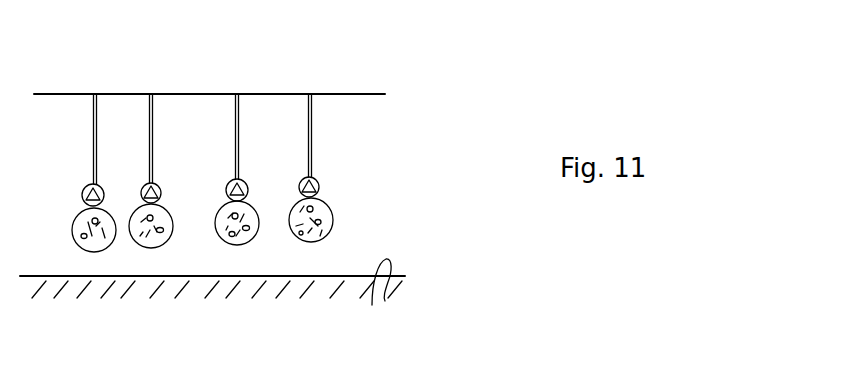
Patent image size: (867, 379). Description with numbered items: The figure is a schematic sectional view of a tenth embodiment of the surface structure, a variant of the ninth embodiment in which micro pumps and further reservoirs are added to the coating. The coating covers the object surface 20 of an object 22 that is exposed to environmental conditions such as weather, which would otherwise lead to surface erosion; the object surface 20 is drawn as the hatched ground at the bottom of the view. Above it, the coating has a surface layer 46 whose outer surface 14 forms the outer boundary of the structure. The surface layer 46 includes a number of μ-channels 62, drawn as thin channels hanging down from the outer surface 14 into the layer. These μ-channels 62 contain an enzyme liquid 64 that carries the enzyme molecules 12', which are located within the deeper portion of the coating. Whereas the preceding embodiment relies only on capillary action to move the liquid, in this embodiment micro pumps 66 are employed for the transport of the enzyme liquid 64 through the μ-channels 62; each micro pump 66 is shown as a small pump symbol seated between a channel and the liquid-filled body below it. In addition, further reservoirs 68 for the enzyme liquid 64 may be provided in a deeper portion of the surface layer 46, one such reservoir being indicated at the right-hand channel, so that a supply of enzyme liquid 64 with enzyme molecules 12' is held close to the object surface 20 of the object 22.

The outer surface 14 is at (275, 91).
The μ-channels 62 is at (233, 122).
The surface layer 46 is at (367, 128).
The enzyme liquid 64 is at (291, 222).
The micro pumps 66 is at (321, 182).
The further reservoirs 68 is at (337, 214).
The enzyme molecules 12' is at (317, 206).
The object surface 20 is at (212, 297).
The object 22 is at (264, 293).